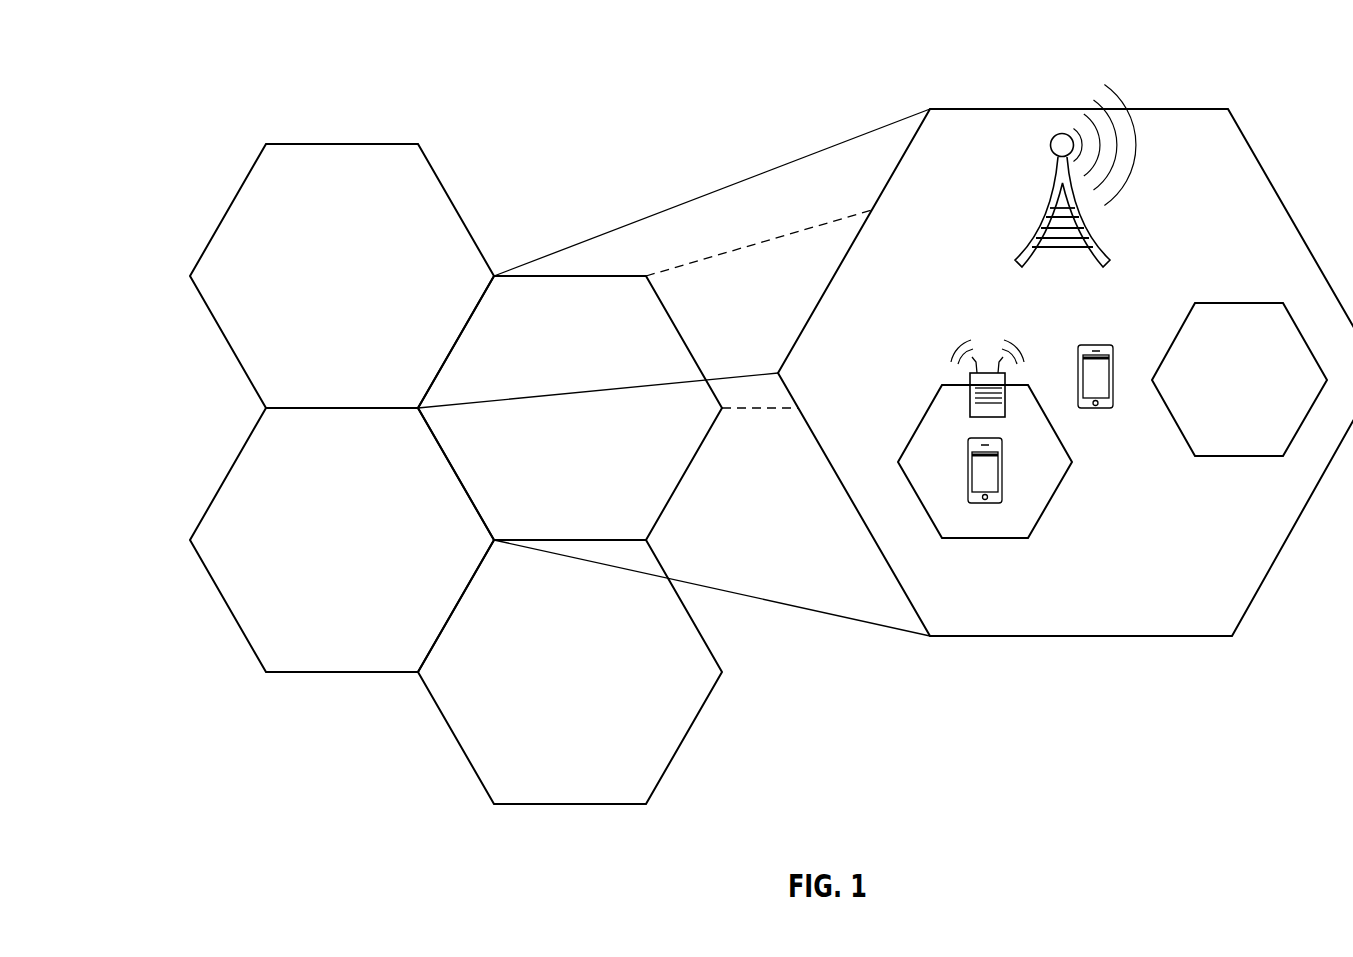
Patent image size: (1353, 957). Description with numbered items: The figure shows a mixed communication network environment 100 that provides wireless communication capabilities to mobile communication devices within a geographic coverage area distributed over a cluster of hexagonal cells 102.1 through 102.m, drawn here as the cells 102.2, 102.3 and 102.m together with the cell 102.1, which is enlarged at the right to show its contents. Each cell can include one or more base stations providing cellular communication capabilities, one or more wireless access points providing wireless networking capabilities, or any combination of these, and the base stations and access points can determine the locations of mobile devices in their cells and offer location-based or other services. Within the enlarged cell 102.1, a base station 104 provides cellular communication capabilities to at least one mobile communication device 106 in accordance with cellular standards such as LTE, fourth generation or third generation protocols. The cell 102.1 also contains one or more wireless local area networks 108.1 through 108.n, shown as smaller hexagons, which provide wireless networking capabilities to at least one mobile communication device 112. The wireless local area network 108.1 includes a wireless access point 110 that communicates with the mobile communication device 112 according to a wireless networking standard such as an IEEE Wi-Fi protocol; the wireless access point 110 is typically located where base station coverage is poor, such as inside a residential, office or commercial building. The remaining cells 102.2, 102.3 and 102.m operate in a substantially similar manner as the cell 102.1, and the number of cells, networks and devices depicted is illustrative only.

The mixed communication network environment 100 is at (240, 60).
The cell 102.1 is at (1025, 109).
The cell 102.2 is at (341, 145).
The cell 102.3 is at (345, 673).
The cell 102.m is at (572, 805).
The base station 104 is at (1025, 248).
The mobile communication device 106 is at (1097, 343).
The wireless local area network 108.1 is at (985, 539).
The wireless local area network 108.n is at (1240, 457).
The wireless access point 110 is at (970, 398).
The mobile communication device 112 is at (967, 492).